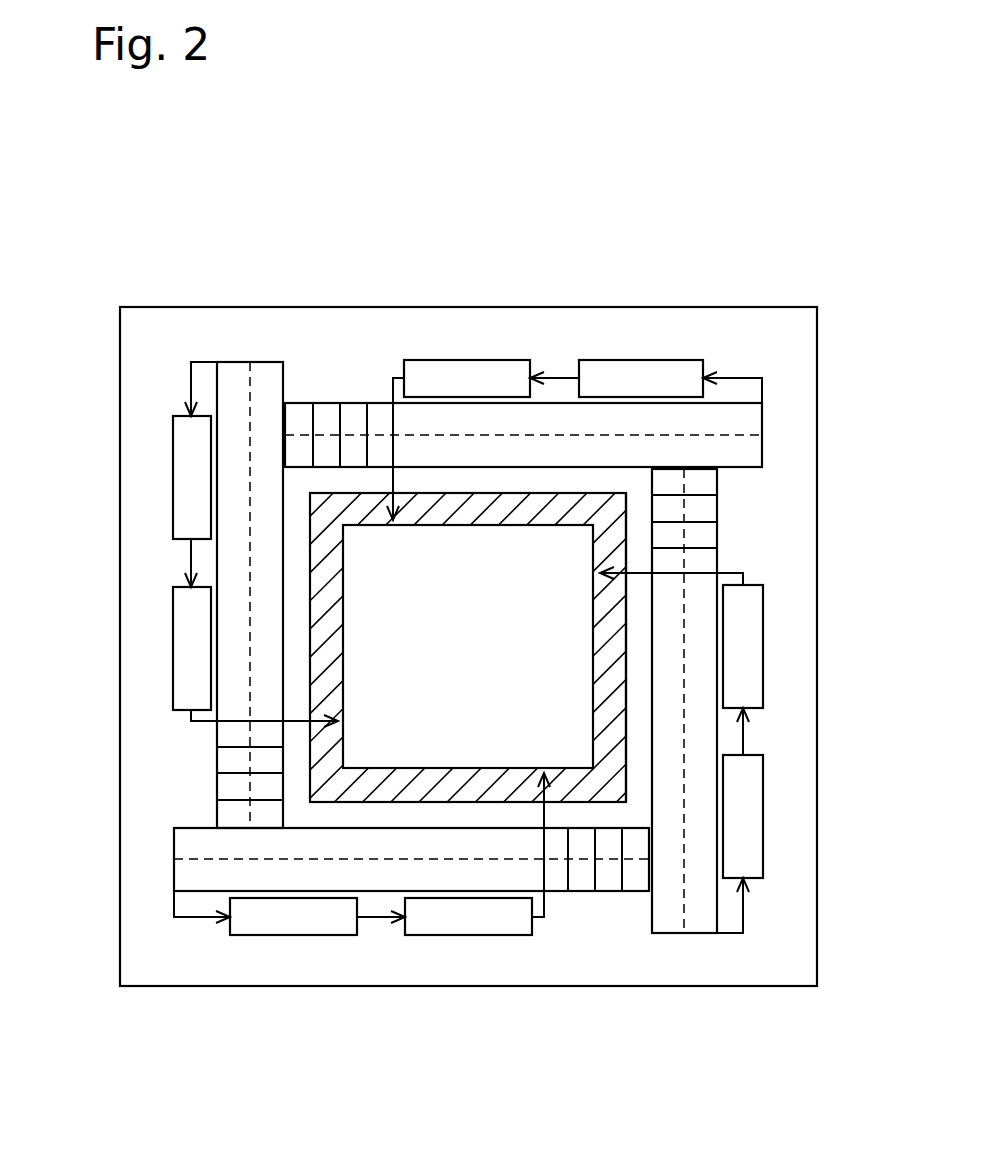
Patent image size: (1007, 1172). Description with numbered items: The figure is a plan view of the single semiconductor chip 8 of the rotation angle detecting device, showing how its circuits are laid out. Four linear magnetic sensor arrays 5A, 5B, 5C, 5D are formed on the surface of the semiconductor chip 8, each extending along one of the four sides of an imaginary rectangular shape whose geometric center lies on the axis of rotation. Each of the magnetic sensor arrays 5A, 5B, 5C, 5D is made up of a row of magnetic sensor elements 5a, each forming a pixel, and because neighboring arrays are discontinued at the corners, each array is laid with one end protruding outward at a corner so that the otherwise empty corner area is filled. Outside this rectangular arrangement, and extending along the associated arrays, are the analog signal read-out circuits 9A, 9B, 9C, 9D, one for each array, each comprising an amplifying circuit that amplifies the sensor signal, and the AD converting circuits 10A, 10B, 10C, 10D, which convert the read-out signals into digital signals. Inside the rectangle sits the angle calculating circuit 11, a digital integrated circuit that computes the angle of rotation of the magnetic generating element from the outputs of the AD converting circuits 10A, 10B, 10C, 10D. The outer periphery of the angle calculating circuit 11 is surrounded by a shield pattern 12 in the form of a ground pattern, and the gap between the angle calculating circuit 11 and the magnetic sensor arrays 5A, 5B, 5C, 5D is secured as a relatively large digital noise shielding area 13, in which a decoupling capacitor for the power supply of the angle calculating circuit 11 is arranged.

The semiconductor chip 8 is at (140, 346).
The magnetic sensor array 5A is at (380, 400).
The magnetic sensor array 5B is at (733, 562).
The magnetic sensor array 5C is at (587, 895).
The magnetic sensor array 5D is at (213, 557).
The magnetic sensor element 5a is at (357, 417).
The signal read-out circuit 9A is at (650, 360).
The signal read-out circuit 9B is at (763, 825).
The signal read-out circuit 9C is at (312, 935).
The signal read-out circuit 9D is at (173, 493).
The AD converting circuit 10A is at (465, 360).
The AD converting circuit 10B is at (763, 638).
The AD converting circuit 10C is at (470, 935).
The AD converting circuit 10D is at (173, 670).
The angle calculating circuit 11 is at (565, 718).
The shield pattern 12 is at (583, 792).
The digital noise shielding area 13 is at (552, 482).